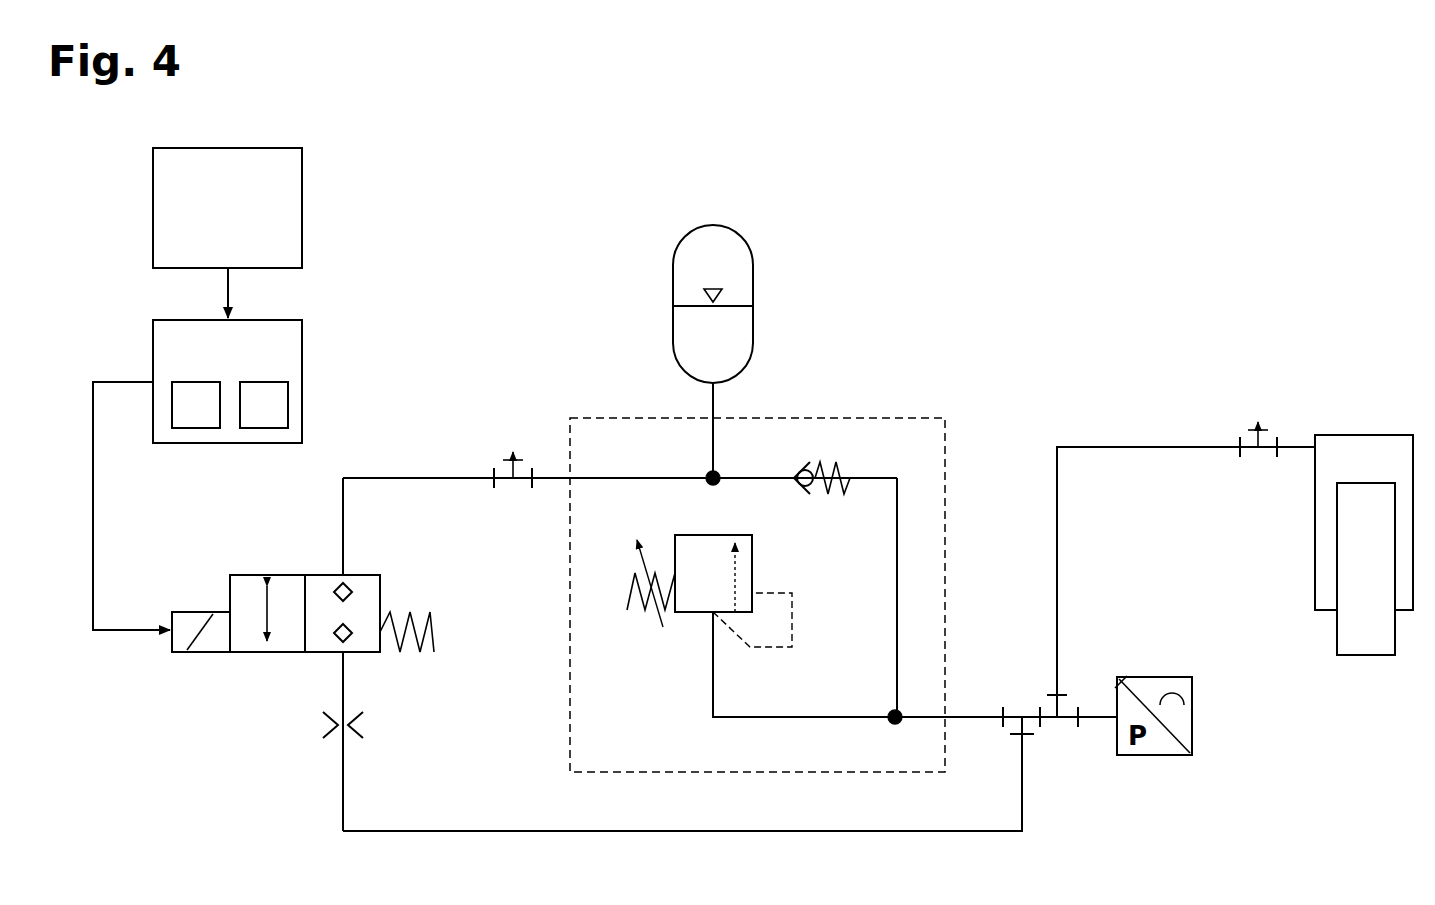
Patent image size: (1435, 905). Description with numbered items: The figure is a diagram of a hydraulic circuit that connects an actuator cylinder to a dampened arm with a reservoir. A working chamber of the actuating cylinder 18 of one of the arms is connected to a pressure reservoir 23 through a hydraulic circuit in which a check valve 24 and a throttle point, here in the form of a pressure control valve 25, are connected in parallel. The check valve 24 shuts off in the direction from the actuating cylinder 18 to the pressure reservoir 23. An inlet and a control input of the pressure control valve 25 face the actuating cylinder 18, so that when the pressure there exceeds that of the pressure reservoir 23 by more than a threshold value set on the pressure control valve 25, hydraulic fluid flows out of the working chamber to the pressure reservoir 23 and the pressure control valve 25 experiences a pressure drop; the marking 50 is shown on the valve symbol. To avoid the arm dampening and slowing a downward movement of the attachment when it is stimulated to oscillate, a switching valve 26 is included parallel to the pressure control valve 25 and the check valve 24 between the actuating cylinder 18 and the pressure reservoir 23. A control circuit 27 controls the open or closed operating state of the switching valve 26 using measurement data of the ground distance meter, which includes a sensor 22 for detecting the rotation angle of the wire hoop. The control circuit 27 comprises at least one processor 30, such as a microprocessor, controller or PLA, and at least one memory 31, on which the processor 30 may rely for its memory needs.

The actuating cylinder 18 is at (1368, 463).
The sensor 22 is at (227, 208).
The pressure reservoir 23 is at (744, 277).
The check valve 24 is at (845, 470).
The pressure control valve 25 is at (738, 591).
The switching valve 26 is at (243, 657).
The control circuit 27 is at (227, 381).
The processor 30 is at (196, 405).
The memory 31 is at (264, 405).
The pressure setting 50 is at (712, 574).